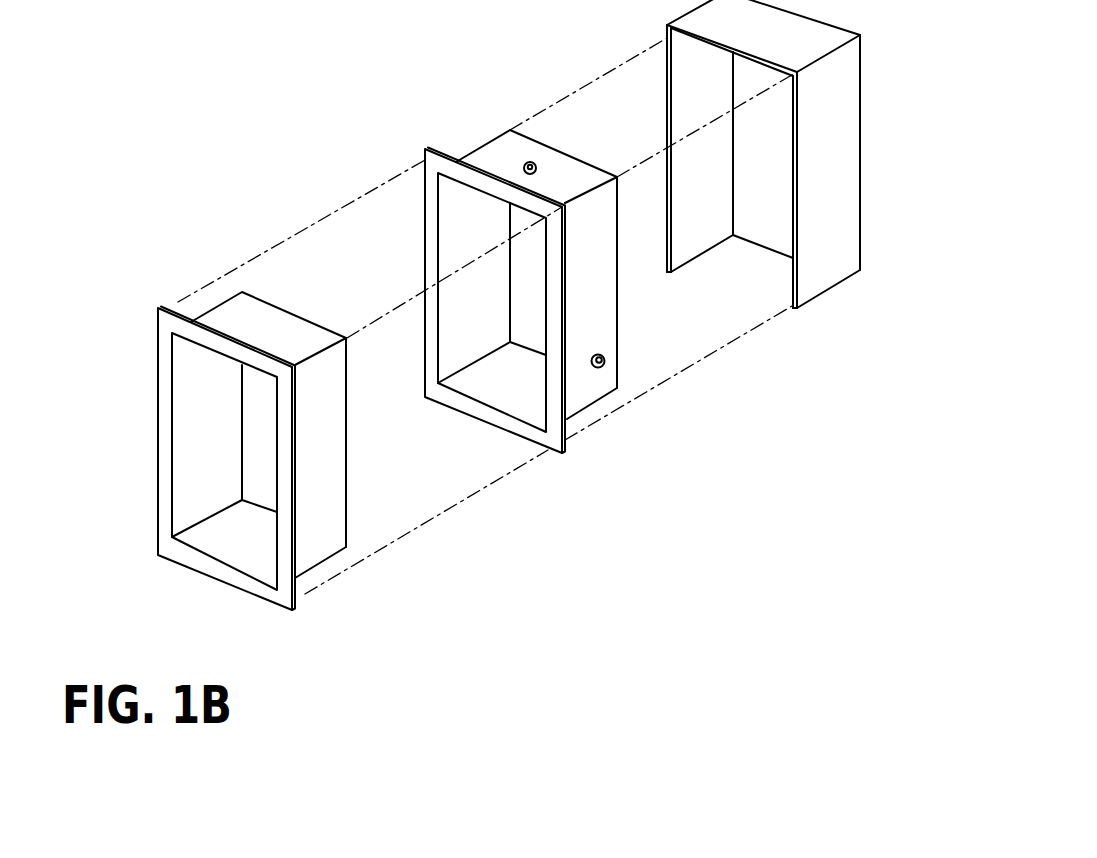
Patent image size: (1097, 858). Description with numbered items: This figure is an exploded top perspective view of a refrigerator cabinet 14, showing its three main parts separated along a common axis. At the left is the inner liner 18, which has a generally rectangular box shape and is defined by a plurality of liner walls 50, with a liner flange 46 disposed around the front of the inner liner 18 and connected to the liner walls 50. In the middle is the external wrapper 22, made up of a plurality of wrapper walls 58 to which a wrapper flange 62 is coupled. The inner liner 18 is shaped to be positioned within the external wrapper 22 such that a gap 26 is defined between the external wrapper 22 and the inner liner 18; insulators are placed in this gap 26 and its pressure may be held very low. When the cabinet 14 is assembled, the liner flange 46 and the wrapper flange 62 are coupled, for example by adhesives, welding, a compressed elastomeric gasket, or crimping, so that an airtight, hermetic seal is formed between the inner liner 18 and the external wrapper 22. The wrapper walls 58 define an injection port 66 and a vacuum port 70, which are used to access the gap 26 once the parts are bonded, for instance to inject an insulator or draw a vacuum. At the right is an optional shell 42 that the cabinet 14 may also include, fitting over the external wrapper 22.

The cabinet 14 is at (607, 490).
The inner liner 18 is at (205, 395).
The external wrapper 22 is at (581, 290).
The gap 26 is at (467, 328).
The shell 42 is at (833, 143).
The liner flange 46 is at (163, 420).
The liner walls 50 is at (320, 377).
The wrapper walls 58 is at (613, 279).
The wrapper flange 62 is at (552, 387).
The injection port 66 is at (530, 162).
The vacuum port 70 is at (598, 368).